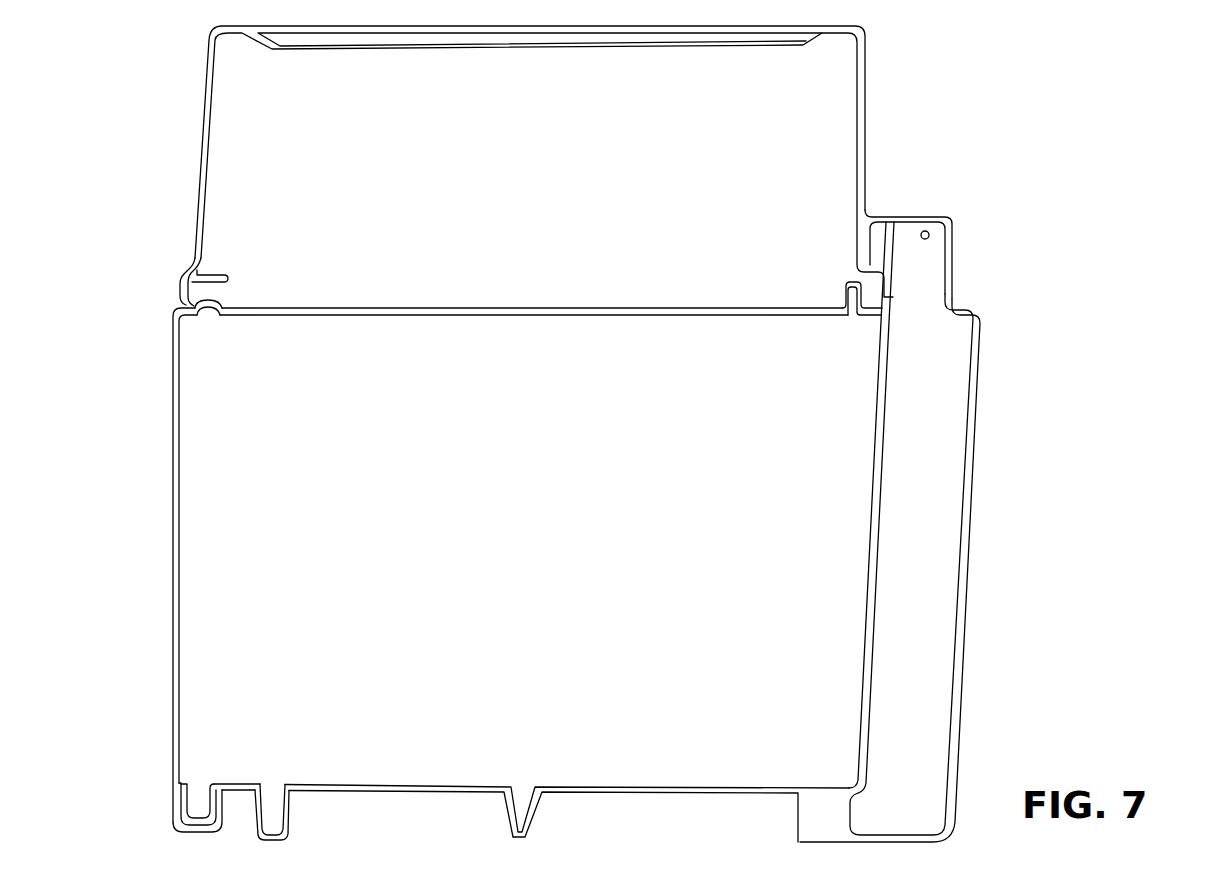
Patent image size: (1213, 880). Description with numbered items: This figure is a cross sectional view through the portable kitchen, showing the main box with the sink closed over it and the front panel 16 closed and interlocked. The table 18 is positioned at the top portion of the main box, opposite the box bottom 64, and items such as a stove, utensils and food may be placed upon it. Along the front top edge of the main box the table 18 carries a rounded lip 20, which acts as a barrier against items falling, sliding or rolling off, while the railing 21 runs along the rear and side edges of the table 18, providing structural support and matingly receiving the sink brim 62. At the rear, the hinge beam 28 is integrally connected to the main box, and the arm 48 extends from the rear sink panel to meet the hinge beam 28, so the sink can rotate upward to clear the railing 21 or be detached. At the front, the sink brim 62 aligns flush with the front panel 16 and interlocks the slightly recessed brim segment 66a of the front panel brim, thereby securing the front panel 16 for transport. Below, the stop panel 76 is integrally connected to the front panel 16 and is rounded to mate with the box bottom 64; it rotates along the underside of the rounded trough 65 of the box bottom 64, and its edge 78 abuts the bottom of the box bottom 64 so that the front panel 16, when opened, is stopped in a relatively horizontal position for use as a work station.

The front panel 16 is at (172, 515).
The table 18 is at (573, 306).
The lip 20 is at (223, 304).
The railing 21 is at (848, 280).
The hinge beam 28 is at (952, 273).
The arm 48 is at (884, 216).
The sink brim 62 is at (178, 290).
The box bottom 64 is at (340, 784).
The rounded trough 65 is at (196, 797).
The brim segment 66a is at (217, 270).
The stop panel 76 is at (173, 828).
The edge 78 is at (213, 833).